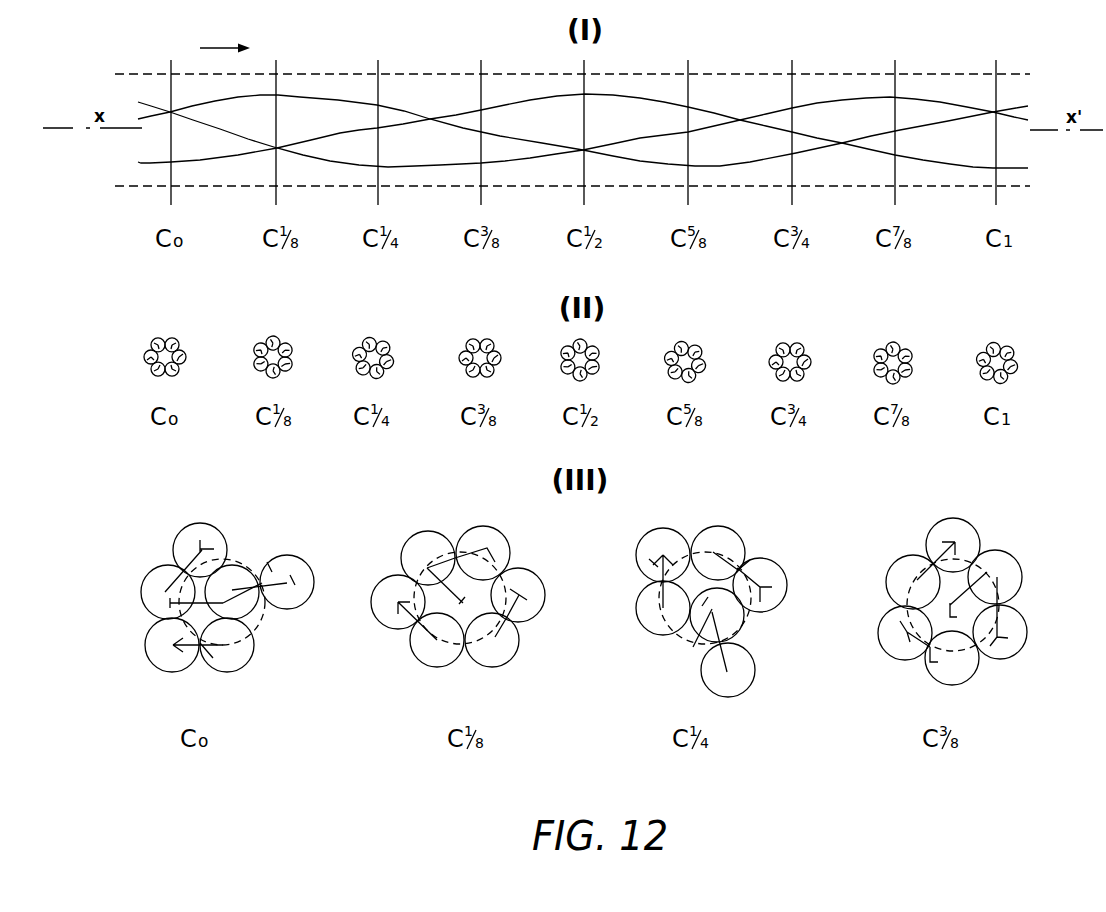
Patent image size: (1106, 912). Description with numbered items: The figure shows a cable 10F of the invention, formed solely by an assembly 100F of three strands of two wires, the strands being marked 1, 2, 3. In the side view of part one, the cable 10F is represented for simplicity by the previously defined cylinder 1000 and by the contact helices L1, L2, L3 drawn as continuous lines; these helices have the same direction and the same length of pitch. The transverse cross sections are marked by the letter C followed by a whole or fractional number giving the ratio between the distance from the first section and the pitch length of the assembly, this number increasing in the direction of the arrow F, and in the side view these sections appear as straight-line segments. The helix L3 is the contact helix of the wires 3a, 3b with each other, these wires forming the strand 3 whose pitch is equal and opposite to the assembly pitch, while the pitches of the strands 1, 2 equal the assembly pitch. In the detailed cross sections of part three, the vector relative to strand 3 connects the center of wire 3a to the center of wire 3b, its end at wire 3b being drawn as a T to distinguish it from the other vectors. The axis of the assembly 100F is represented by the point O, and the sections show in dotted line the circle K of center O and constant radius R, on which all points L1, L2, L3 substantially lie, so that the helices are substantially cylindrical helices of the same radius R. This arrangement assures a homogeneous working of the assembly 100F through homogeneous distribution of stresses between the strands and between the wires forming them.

The cylinder 1000 is at (357, 74).
The assembly 100F is at (700, 110).
The cable 10F is at (819, 64).
The strand 1 is at (160, 670).
The strand 2 is at (140, 590).
The strand 3 is at (285, 555).
The wire 3a is at (235, 566).
The wire 3b is at (310, 562).
The circle K is at (262, 618).
The contact helix L1 is at (212, 100).
The contact helix L2 is at (1028, 607).
The contact helix L3 is at (228, 130).
The radius R is at (578, 607).
The center O is at (594, 607).
The arrow F is at (225, 38).